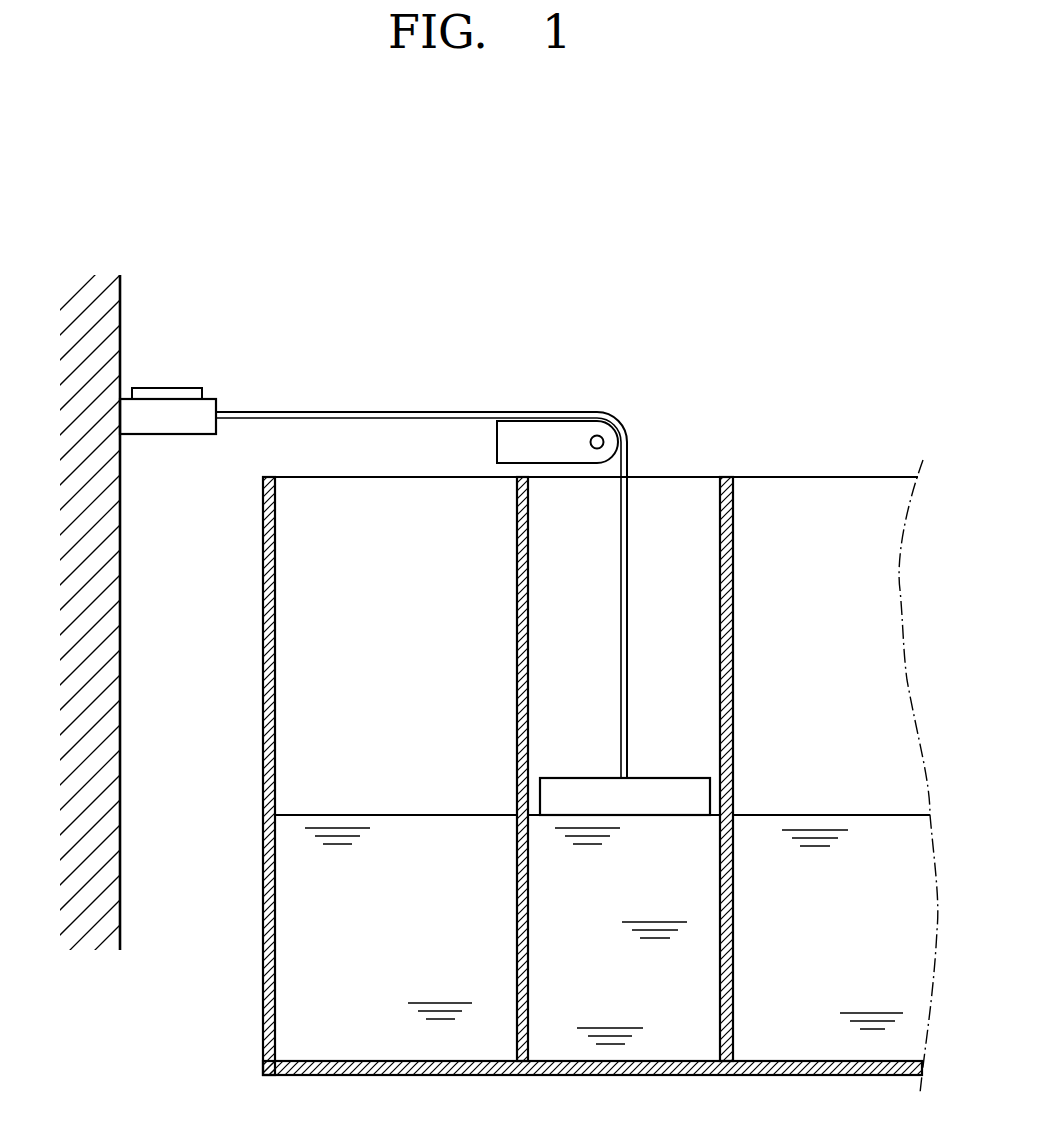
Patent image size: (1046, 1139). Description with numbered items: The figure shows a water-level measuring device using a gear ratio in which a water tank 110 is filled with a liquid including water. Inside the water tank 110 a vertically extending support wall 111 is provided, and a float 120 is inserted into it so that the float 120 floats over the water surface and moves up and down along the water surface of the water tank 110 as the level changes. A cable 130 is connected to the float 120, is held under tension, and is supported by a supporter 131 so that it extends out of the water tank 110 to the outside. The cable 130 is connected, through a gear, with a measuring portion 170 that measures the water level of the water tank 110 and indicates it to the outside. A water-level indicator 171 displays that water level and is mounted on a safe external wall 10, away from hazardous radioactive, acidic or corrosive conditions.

The external wall 10 is at (121, 608).
The water tank 110 is at (262, 733).
The support wall 111 is at (735, 613).
The float 120 is at (660, 778).
The cable 130 is at (338, 412).
The supporter 131 is at (497, 440).
The measuring portion 170 is at (167, 435).
The water-level indicator 171 is at (177, 387).